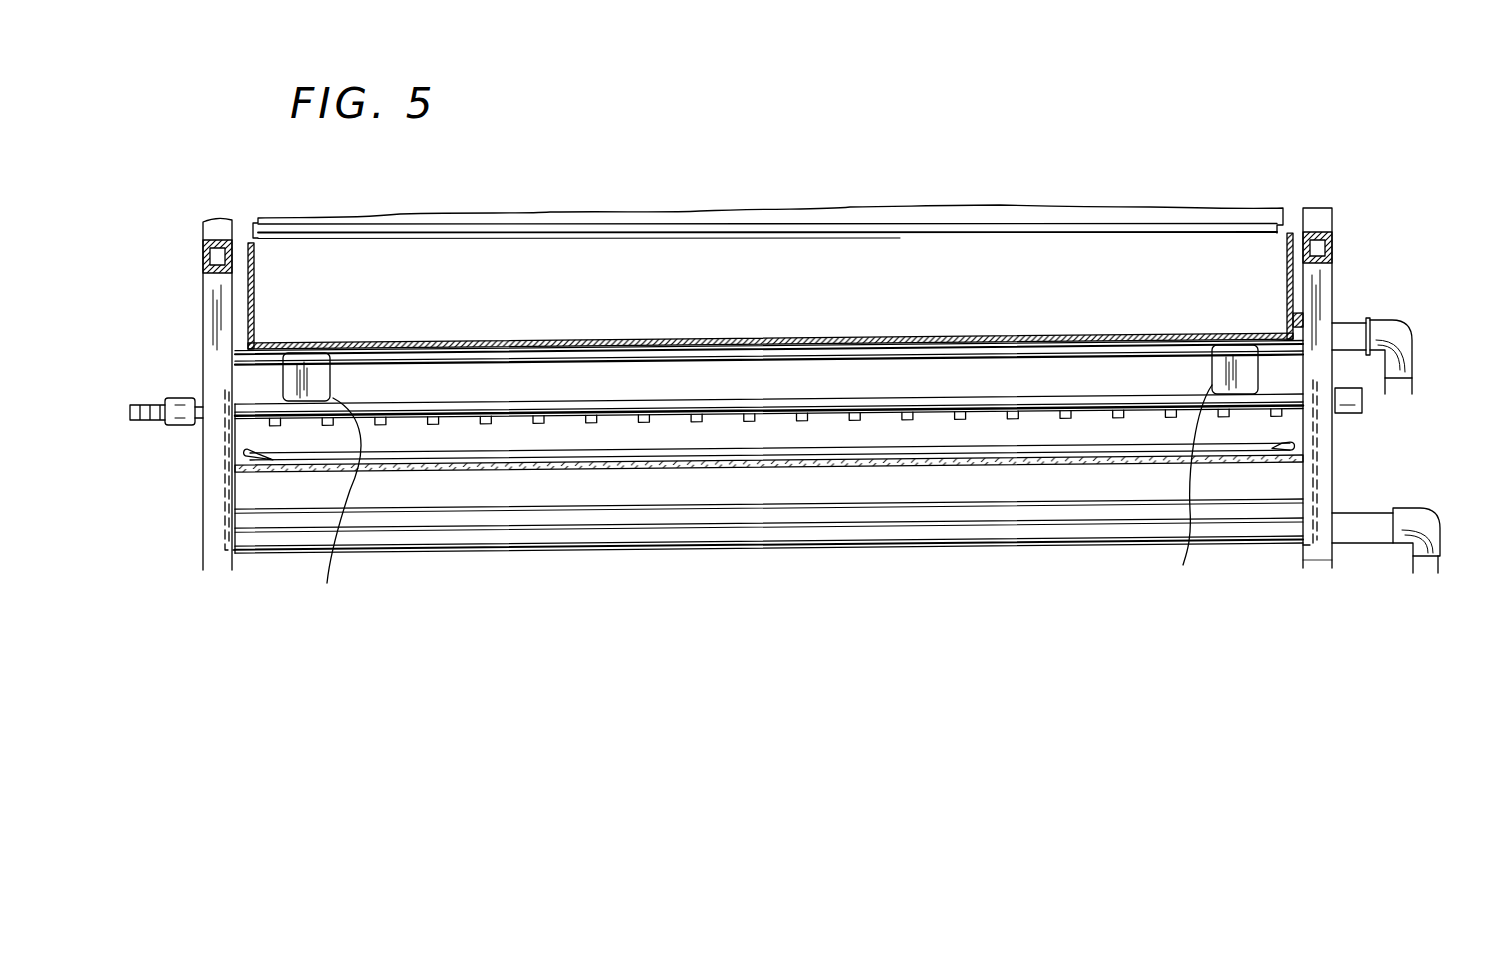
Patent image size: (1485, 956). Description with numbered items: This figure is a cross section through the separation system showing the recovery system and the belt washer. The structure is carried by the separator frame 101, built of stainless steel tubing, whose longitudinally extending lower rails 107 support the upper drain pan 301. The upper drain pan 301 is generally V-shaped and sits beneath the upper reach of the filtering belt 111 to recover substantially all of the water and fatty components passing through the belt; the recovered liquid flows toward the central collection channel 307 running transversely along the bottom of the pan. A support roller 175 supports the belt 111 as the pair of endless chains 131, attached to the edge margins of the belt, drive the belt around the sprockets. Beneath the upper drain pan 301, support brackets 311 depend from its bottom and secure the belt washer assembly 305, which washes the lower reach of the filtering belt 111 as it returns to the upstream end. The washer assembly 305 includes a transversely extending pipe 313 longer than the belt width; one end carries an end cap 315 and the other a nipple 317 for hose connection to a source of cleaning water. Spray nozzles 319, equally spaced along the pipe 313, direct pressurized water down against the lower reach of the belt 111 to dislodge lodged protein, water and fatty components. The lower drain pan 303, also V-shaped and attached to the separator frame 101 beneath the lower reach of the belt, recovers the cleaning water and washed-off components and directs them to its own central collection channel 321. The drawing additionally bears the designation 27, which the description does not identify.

The heating assembly 27 is at (1218, 176).
The separator frame 101 is at (1337, 292).
The lower rails 107 is at (226, 266).
The support roller 175 is at (966, 240).
The upper drain pan 301 is at (500, 337).
The lower drain pan 303 is at (1003, 471).
The belt washer assembly 305 is at (557, 428).
The central collection channel 307 is at (270, 372).
The support brackets 311 is at (781, 502).
The pipe 313 is at (845, 418).
The end cap 315 is at (1362, 413).
The nipple 317 is at (163, 426).
The spray nozzles 319 is at (1066, 426).
The central collection channel 321 is at (687, 553).
The filtering belt 111 is at (588, 458).
The endless chains 131 is at (248, 456).